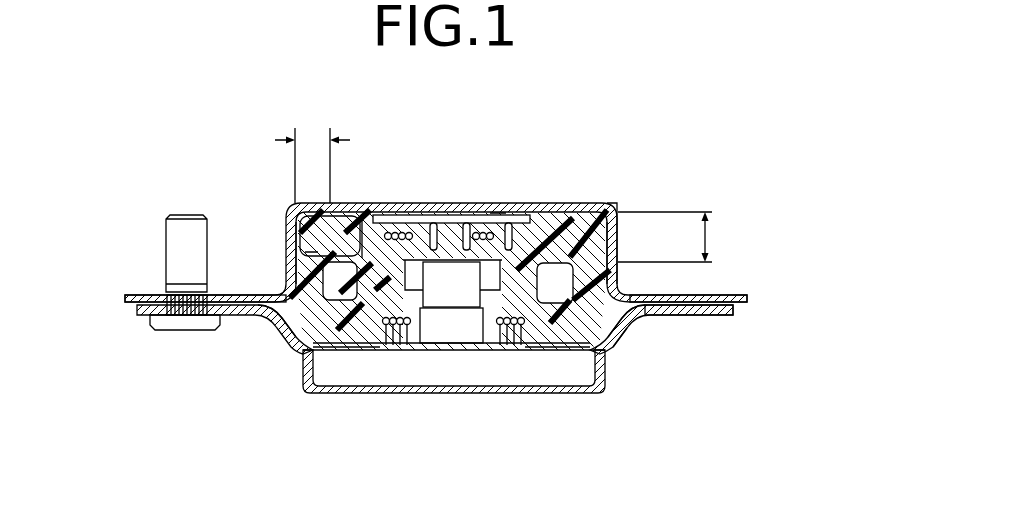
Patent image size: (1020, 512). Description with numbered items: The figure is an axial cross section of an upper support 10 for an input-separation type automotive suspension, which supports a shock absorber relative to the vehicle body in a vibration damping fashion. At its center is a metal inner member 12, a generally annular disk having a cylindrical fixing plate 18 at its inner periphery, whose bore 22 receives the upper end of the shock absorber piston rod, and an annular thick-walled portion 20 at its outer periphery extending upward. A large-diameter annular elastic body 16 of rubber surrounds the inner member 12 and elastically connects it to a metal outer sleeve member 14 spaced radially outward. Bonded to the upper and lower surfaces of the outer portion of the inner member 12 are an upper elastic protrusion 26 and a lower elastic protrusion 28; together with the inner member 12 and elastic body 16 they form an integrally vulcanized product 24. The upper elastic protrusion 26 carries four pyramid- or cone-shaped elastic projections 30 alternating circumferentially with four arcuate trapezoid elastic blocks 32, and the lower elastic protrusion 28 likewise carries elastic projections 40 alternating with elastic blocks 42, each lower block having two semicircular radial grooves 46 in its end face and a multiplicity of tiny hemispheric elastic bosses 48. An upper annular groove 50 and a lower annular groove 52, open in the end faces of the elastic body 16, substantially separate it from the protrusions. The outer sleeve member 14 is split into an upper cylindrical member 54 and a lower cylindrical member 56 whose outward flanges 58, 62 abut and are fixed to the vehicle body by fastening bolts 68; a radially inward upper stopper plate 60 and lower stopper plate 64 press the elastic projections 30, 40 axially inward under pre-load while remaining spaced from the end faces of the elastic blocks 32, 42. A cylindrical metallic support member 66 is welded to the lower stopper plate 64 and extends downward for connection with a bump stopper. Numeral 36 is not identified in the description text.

The upper support 10 is at (752, 168).
The inner member 12 is at (512, 210).
The outer sleeve member 14 is at (733, 279).
The elastic body 16 is at (618, 210).
The cylindrical fixing plate 18 is at (421, 212).
The annular thick-walled portion 20 is at (305, 344).
The bore 22 is at (481, 215).
The integrally vulcanized product 24 is at (647, 140).
The upper elastic protrusion 26 is at (582, 206).
The lower elastic protrusion 28 is at (607, 338).
The elastic projections 30 is at (356, 212).
The elastic blocks 32 is at (296, 243).
The abutment portion 36 is at (498, 212).
The elastic projections 40 is at (347, 352).
The elastic blocks 42 is at (383, 338).
The radial grooves 46 is at (381, 340).
The elastic tiny bosses 48 is at (487, 350).
The upper annular groove 50 is at (331, 213).
The lower annular groove 52 is at (312, 328).
The upper cylindrical member 54 is at (734, 290).
The lower cylindrical member 56 is at (719, 301).
The outward flange 58 is at (145, 293).
The upper stopper plate 60 is at (364, 214).
The outward flange 62 is at (143, 313).
The lower stopper plate 64 is at (558, 340).
The metallic support member 66 is at (302, 400).
The fastening bolts 68 is at (186, 228).